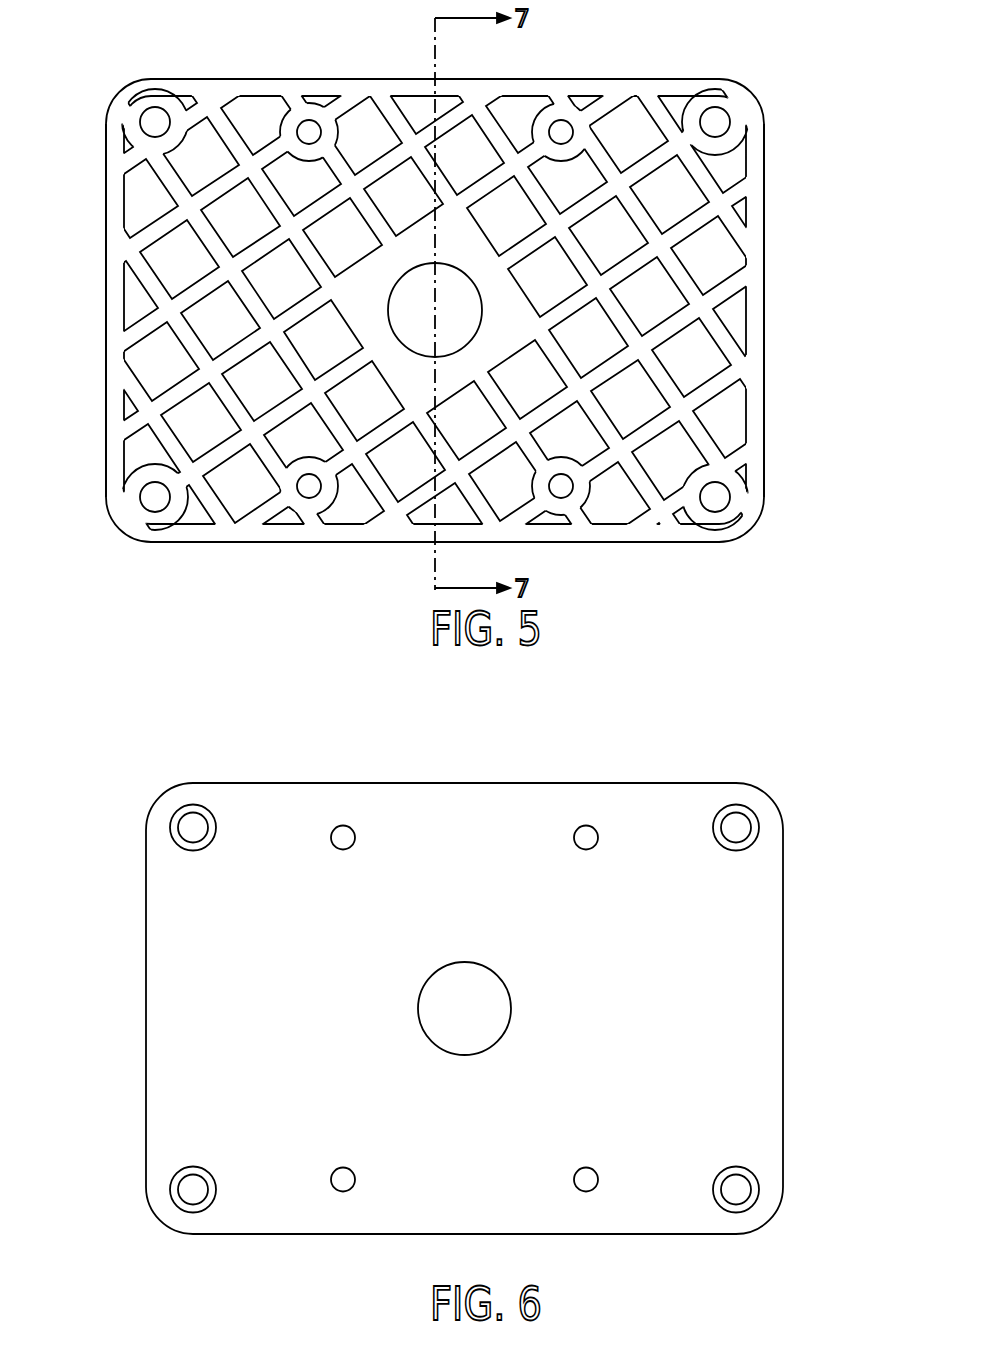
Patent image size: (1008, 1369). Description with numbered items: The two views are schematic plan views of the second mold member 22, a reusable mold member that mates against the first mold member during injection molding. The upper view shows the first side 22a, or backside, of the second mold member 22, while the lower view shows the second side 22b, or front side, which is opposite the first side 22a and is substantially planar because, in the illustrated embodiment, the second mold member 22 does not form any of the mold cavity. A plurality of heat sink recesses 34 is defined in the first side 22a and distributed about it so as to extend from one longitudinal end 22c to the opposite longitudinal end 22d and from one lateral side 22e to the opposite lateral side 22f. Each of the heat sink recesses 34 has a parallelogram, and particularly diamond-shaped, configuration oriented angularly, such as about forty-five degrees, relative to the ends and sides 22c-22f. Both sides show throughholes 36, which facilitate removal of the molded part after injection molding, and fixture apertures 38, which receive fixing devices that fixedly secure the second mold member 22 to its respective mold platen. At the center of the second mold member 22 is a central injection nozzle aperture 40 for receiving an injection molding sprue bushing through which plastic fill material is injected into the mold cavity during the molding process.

In FIG. 5, the second mold member 22 is at (812, 300).
In FIG. 6, the second mold member 22 is at (819, 1005).
In FIG. 5, the first side 22a is at (200, 98).
In FIG. 6, the second side 22b is at (685, 1217).
In FIG. 5, the longitudinal end 22c is at (768, 360).
In FIG. 5, the opposite longitudinal end 22d is at (104, 310).
In FIG. 5, the lateral side 22e is at (382, 545).
In FIG. 5, the opposite lateral side 22f is at (672, 80).
In FIG. 5, the heat sink recesses 34 is at (513, 96).
In FIG. 5, the throughholes 36 is at (309, 132).
In FIG. 6, the throughholes 36 is at (343, 835).
In FIG. 5, the fixture apertures 38 is at (155, 123).
In FIG. 6, the fixture apertures 38 is at (188, 822).
In FIG. 5, the central injection nozzle aperture 40 is at (405, 321).
In FIG. 6, the central injection nozzle aperture 40 is at (432, 1011).